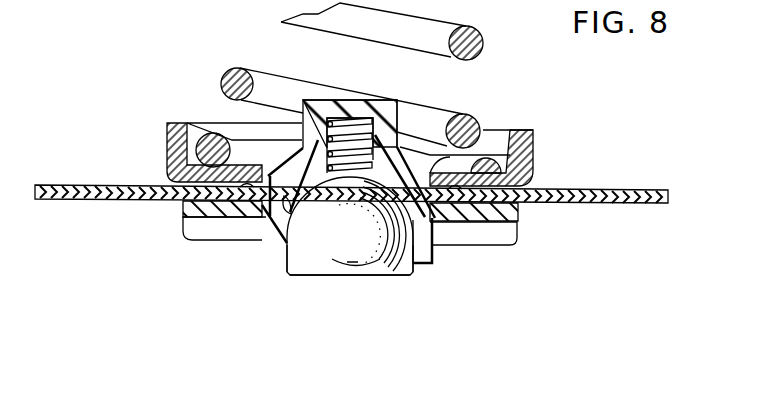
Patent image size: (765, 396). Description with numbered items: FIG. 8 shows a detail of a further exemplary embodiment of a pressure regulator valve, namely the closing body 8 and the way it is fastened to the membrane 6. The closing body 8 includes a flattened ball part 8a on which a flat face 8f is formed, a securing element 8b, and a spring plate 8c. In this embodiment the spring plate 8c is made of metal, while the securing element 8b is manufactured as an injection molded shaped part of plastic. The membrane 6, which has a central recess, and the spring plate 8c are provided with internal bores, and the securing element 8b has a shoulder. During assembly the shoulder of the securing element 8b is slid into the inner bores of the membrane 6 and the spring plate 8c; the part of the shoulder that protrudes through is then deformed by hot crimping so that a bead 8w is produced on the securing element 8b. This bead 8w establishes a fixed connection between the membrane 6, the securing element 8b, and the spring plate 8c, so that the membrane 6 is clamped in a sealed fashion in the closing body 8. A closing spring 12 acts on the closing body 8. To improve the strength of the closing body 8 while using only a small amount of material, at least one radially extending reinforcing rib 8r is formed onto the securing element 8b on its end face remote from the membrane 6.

The closing spring 12 is at (482, 39).
The bead 8w is at (238, 125).
The closing body 8 is at (298, 298).
The spring plate 8c is at (530, 143).
The securing element 8b is at (487, 213).
The reinforcing rib 8r is at (463, 232).
The flat face 8f is at (333, 277).
The ball part 8a is at (387, 277).
The membrane 6 is at (583, 190).